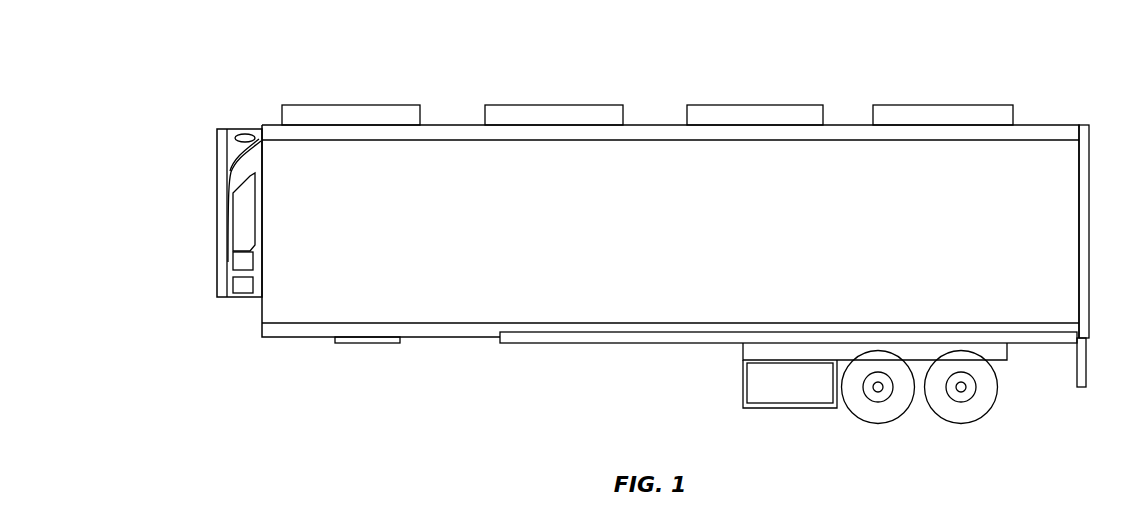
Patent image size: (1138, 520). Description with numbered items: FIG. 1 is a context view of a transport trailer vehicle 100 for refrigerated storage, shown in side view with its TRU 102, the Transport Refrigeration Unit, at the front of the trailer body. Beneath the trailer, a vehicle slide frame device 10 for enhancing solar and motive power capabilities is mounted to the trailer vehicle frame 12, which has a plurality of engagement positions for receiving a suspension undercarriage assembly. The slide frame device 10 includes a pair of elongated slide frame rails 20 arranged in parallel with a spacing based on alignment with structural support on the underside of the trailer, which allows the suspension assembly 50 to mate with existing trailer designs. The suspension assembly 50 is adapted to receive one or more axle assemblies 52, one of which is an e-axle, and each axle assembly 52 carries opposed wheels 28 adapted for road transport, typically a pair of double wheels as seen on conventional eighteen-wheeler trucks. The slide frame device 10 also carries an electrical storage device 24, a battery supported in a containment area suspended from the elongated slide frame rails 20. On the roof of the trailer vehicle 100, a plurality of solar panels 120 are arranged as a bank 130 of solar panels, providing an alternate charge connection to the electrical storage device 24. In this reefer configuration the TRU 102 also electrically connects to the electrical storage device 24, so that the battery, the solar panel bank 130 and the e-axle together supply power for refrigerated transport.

The vehicle slide frame device 10 is at (692, 271).
The trailer vehicle frame 12 is at (507, 376).
The elongated slide frame rails 20 is at (1007, 353).
The electrical storage device 24 is at (800, 387).
The wheels 28 is at (868, 398).
The suspension assembly 50 is at (915, 431).
The axle assembly 52 is at (876, 380).
The transport trailer vehicle 100 is at (343, 197).
The TRU 102 is at (217, 230).
The solar panels 120 is at (387, 105).
The bank of solar panels 130 is at (296, 80).